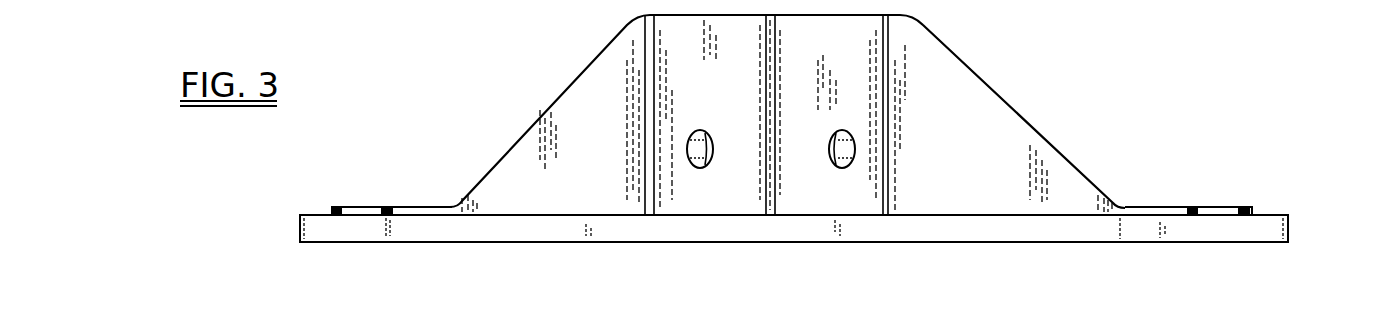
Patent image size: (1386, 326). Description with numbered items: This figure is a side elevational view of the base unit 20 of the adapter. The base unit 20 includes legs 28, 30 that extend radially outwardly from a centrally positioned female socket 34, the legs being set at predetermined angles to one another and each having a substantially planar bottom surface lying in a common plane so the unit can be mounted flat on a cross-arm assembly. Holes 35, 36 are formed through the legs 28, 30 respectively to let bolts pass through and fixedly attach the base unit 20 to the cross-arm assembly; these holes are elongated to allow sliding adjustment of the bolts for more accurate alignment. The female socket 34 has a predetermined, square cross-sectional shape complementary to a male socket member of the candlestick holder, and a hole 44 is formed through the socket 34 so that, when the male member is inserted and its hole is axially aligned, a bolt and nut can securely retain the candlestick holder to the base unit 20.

The base unit 20 is at (528, 143).
The leg 28 is at (1262, 223).
The leg 30 is at (320, 222).
The female socket 34 is at (683, 45).
The hole 35 is at (1193, 208).
The hole 36 is at (383, 212).
The hole 44 is at (687, 150).